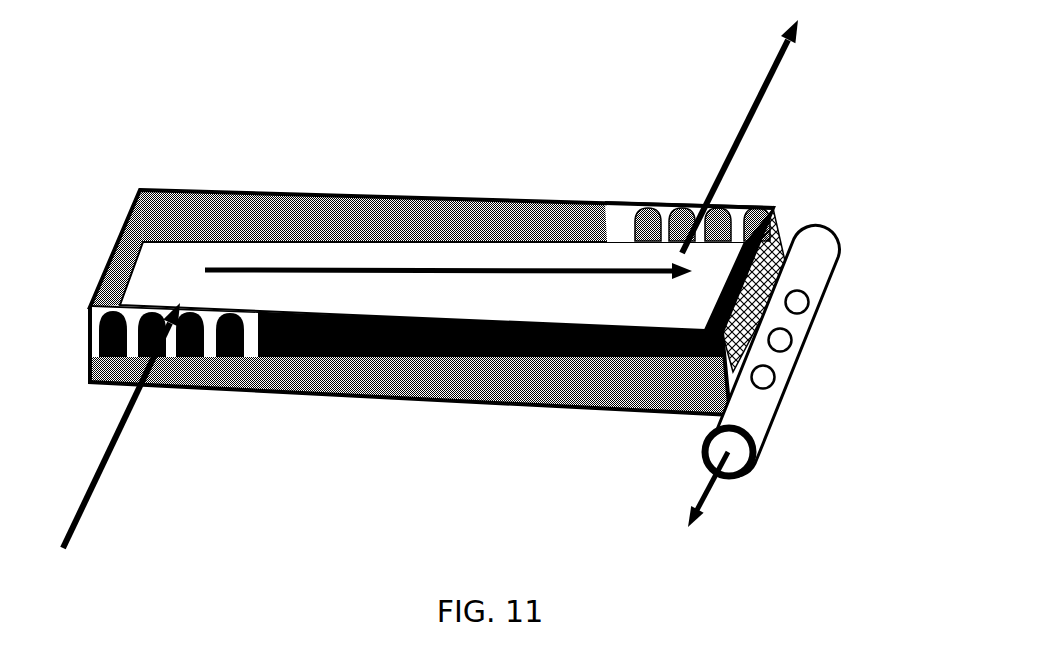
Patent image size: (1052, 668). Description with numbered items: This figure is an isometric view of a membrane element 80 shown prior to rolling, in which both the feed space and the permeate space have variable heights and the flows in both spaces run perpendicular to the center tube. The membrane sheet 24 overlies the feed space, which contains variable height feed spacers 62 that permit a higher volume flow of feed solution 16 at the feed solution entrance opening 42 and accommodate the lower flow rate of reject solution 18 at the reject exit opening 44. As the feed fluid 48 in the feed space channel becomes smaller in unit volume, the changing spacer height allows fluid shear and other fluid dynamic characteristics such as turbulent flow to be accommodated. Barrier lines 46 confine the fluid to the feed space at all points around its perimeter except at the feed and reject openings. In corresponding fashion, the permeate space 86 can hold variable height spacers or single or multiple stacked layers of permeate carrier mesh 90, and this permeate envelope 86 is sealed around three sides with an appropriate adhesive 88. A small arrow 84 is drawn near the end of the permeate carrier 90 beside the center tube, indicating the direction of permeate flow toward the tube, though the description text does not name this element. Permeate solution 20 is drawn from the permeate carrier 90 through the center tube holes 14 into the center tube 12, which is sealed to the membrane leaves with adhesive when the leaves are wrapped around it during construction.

The permeate collection tube 12 is at (755, 427).
The holes 14 is at (803, 295).
The feed solution 16 is at (117, 443).
The reject solution 18 is at (785, 58).
The permeate solution 20 is at (708, 492).
The membrane sheet 24 is at (485, 298).
The feed solution entrance opening 42 is at (192, 397).
The reject exit opening 44 is at (777, 192).
The barrier lines 46 is at (275, 200).
The feed fluid 48 is at (345, 268).
The variable height feed spacers 62 is at (237, 360).
The membrane element 80 is at (528, 309).
The light coupling direction 84 is at (785, 325).
The permeate space 86 is at (482, 403).
The adhesive 88 is at (540, 387).
The permeate carrier mesh 90 is at (775, 278).